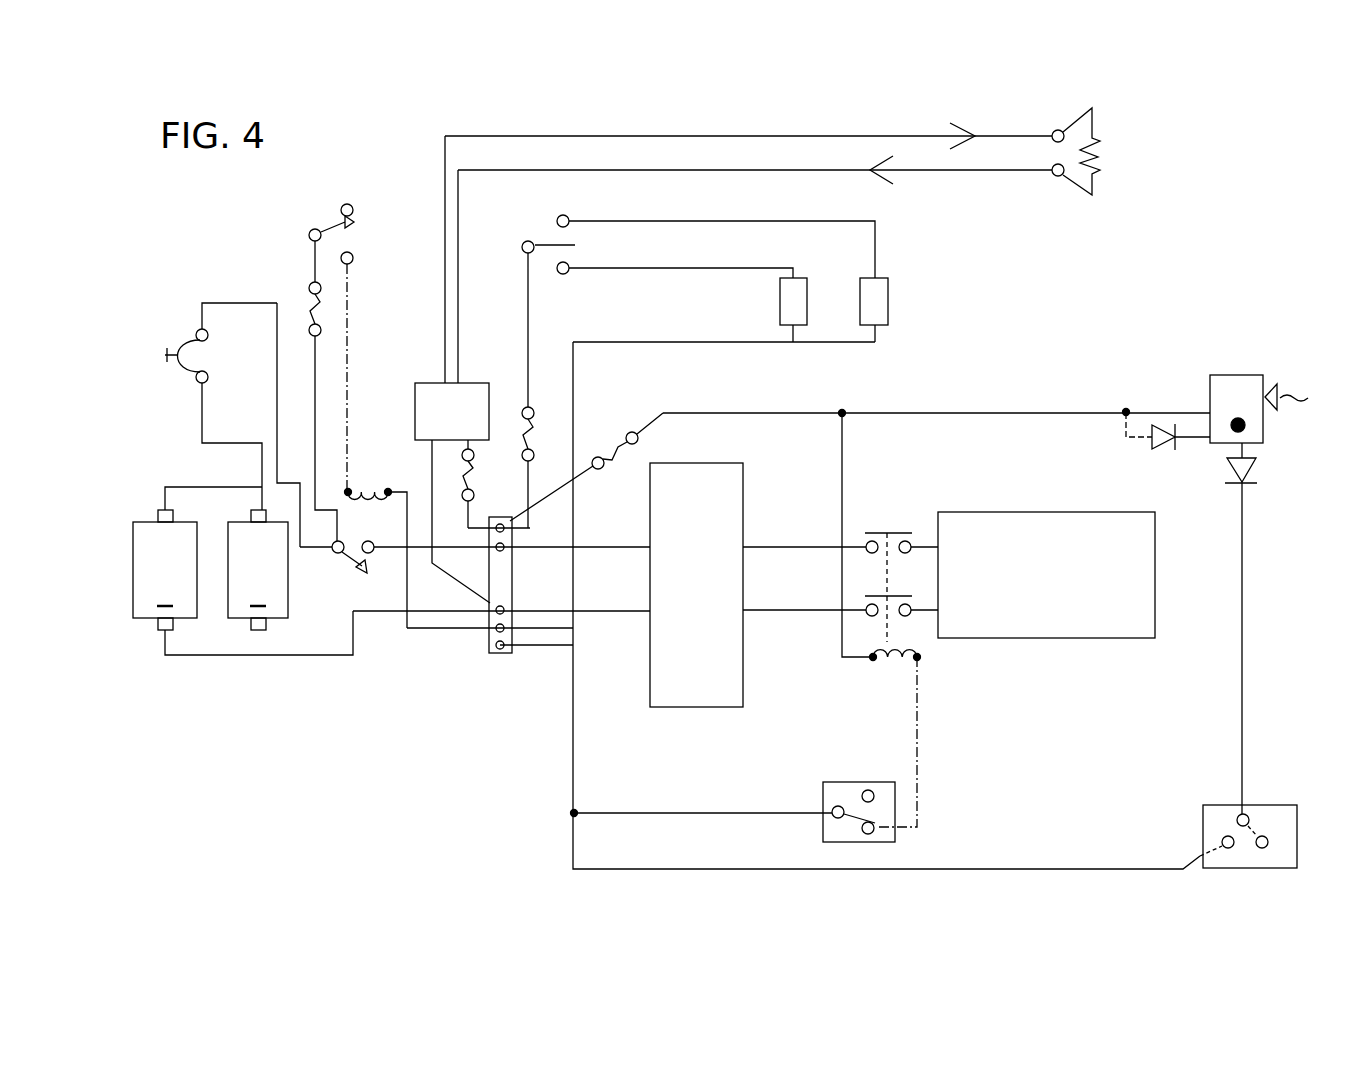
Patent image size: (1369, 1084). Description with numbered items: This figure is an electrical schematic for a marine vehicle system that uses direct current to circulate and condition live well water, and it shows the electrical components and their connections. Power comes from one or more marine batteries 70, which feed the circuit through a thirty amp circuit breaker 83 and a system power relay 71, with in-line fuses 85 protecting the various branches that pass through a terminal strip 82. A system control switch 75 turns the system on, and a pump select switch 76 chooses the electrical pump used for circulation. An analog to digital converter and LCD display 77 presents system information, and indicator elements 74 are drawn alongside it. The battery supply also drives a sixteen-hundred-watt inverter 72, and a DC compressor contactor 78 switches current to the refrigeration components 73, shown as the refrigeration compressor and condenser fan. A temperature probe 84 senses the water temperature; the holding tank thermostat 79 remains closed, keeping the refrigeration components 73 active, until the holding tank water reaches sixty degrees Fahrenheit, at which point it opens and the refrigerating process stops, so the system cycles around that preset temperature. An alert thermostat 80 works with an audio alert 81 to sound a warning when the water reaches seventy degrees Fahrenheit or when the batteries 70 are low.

The marine batteries 70 is at (133, 582).
The system power relay 71 is at (380, 489).
The 1600 watt inverter 72 is at (745, 672).
The refrigeration components 73 is at (1042, 638).
The indicator lights 74 is at (780, 292).
The system control switch 75 is at (311, 230).
The pump select switch 76 is at (528, 240).
The analog to digital converter and LCD display 77 is at (432, 383).
The DC compressor contactor 78 is at (878, 663).
The holding tank thermostat 79 is at (351, 572).
The alert thermostat 80 is at (1262, 805).
The audio alert 81 is at (1240, 368).
The terminal strip 82 is at (500, 656).
The 30 amp circuit breaker 83 is at (180, 345).
The temperature probe 84 is at (1103, 152).
The in-line fuses 85 is at (311, 302).